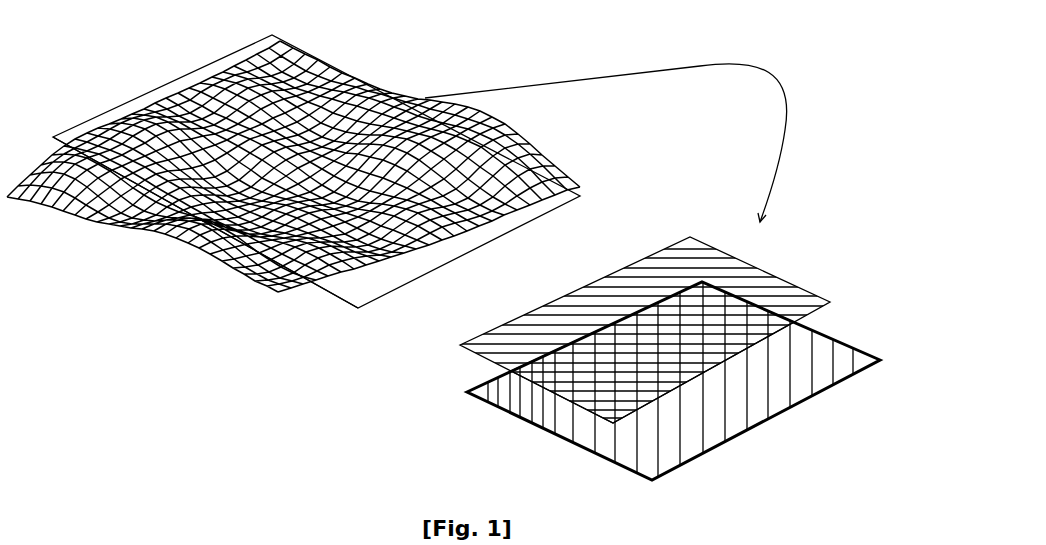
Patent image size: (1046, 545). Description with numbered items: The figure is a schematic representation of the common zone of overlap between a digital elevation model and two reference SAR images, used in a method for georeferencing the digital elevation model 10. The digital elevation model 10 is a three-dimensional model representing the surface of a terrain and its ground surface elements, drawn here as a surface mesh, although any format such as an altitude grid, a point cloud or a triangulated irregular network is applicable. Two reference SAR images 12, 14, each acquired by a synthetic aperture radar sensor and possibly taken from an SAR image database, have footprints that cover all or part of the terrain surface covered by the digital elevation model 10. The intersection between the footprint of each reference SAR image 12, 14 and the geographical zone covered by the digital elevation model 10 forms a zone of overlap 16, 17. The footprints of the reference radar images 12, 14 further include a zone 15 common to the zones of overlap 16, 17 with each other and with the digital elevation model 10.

The digital elevation model 10 is at (575, 152).
The reference SAR image 12 is at (158, 67).
The reference SAR image 14 is at (297, 302).
The common zone 15 is at (575, 380).
The zone of overlap 16 is at (463, 363).
The zone of overlap 17 is at (840, 330).